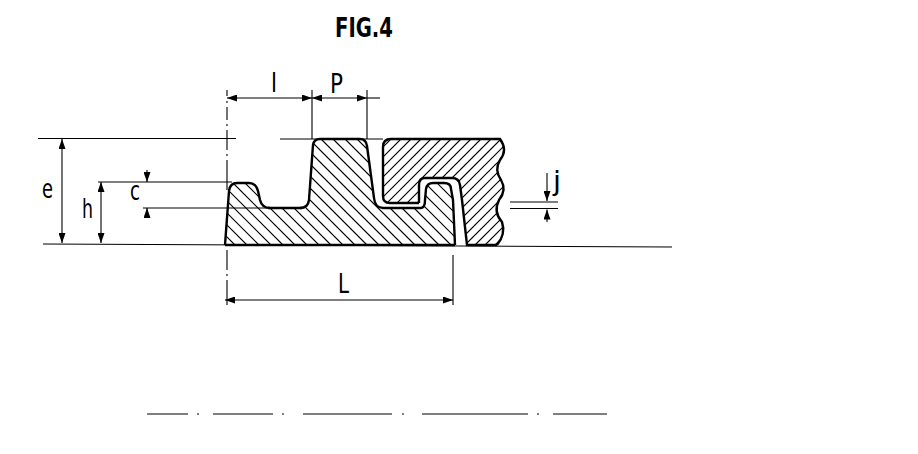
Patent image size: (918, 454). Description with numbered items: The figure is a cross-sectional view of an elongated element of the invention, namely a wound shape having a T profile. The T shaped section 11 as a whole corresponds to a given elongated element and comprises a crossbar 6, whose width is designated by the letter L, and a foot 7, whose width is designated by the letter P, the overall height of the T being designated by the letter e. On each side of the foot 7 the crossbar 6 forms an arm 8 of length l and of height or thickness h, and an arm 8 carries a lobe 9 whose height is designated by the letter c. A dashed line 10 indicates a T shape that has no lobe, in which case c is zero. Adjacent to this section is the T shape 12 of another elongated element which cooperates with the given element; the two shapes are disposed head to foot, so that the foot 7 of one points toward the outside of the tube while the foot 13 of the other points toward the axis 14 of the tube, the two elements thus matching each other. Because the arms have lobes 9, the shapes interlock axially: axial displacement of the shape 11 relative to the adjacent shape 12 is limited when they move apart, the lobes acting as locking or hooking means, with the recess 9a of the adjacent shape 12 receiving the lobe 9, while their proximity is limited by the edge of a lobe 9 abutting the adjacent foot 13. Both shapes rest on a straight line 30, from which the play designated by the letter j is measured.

The crossbar 6 is at (294, 257).
The foot 7 is at (376, 130).
The arm 8 is at (280, 169).
The lobe 9 is at (437, 208).
The groove 9a is at (403, 178).
The dashed line 10 is at (226, 244).
The T shaped section 11 is at (396, 277).
The T shape of another elongated element 12 is at (491, 125).
The foot 13 is at (492, 224).
The axis 14 is at (238, 412).
The straight line 30 is at (580, 248).